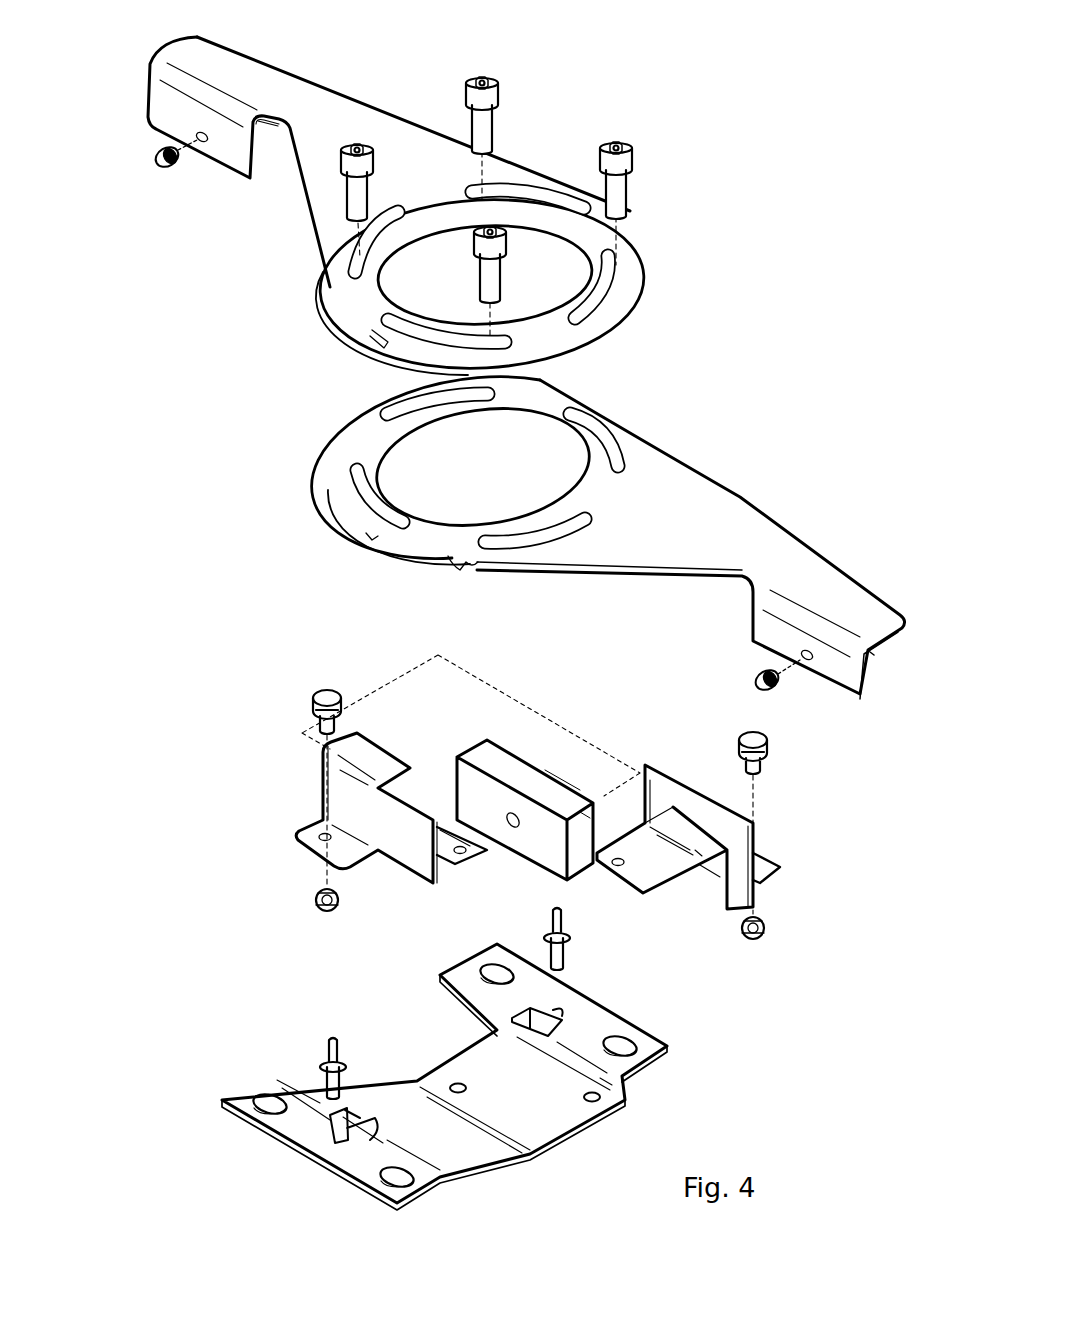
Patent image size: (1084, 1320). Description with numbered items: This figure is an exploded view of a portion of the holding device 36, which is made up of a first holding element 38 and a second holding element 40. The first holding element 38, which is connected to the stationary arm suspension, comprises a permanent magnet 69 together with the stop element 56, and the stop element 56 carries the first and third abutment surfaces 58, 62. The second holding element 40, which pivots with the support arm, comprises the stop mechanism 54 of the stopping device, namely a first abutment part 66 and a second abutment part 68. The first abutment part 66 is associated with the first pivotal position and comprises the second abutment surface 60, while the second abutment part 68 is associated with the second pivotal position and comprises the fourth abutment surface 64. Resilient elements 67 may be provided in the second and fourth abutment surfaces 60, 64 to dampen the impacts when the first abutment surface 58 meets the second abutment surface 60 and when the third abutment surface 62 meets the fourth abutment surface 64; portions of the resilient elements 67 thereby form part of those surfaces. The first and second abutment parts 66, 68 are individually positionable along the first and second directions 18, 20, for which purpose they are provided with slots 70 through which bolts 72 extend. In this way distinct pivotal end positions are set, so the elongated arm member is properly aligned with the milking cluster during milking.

The first direction 18 is at (502, 379).
The second direction 20 is at (408, 510).
The holding device 36 is at (502, 379).
The first holding element 38 is at (535, 810).
The second holding element 40 is at (523, 322).
The stop mechanism 54 is at (635, 447).
The stop element 56 is at (553, 1047).
The first abutment surface 58 is at (688, 828).
The second abutment surface 60 is at (777, 640).
The third abutment surface 62 is at (328, 800).
The fourth abutment surface 64 is at (215, 162).
The first abutment part 66 is at (763, 532).
The resilient elements 67 is at (176, 165).
The second abutment part 68 is at (327, 98).
The permanent magnet 69 is at (530, 780).
The slots 70 is at (357, 473).
The bolts 72 is at (493, 199).